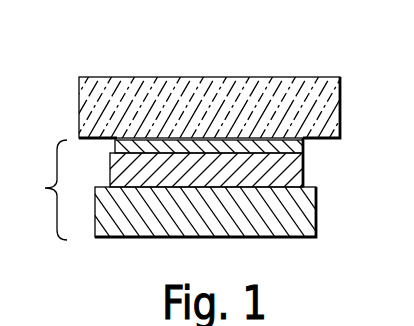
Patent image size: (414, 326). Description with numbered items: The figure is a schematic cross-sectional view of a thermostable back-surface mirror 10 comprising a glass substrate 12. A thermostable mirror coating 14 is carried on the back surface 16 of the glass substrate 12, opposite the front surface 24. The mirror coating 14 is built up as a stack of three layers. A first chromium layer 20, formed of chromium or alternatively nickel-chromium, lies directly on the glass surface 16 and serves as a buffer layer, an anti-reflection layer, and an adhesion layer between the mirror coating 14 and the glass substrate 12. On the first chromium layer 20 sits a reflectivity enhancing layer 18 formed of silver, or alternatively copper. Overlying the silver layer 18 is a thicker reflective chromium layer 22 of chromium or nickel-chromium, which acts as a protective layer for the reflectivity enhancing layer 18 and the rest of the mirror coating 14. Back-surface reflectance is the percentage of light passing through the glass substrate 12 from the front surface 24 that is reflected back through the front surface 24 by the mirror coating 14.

The back-surface mirror 10 is at (120, 60).
The glass substrate 12 is at (326, 93).
The front surface 24 is at (290, 77).
The thermostable mirror coating 14 is at (45, 188).
The surface 16 is at (97, 142).
The reflectivity enhancing layer 18 is at (305, 163).
The first chromium layer 20 is at (305, 145).
The reflective chromium layer 22 is at (286, 226).